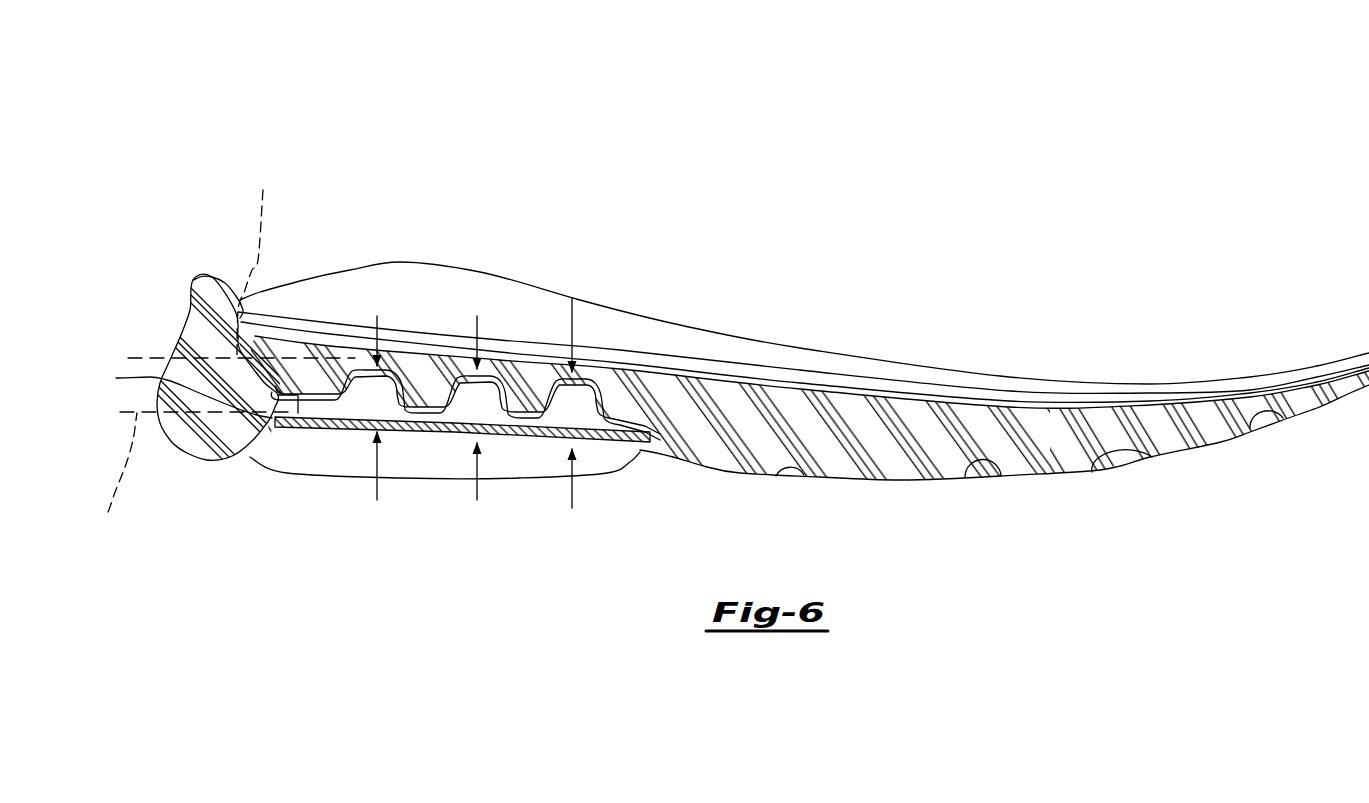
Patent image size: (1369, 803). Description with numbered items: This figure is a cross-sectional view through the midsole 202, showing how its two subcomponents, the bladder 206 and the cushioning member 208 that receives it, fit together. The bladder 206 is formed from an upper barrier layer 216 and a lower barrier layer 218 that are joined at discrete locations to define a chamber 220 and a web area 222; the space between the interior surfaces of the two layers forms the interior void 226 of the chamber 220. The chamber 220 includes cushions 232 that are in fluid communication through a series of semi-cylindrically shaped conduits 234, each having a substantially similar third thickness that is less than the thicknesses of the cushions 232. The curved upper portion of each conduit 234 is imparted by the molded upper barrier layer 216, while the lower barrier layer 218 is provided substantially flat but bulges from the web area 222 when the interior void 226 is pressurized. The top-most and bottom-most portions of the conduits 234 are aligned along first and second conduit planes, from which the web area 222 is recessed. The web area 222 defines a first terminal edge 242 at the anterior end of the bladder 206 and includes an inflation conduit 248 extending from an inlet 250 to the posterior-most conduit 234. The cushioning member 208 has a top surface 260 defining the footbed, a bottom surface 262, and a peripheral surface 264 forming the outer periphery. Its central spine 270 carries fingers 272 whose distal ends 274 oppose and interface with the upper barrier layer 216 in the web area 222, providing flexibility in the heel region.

The midsole 202 is at (259, 94).
The bladder 206 is at (346, 511).
The cushioning member 208 is at (449, 258).
The upper barrier layer 216 is at (292, 398).
The lower barrier layer 218 is at (334, 436).
The chamber 220 is at (578, 485).
The web area 222 is at (648, 528).
The interior void 226 is at (575, 412).
The cushions 232 is at (453, 480).
The conduits 234 is at (412, 376).
The first terminal edge 242 is at (640, 452).
The inflation conduit 248 is at (290, 440).
The inlet 250 is at (176, 389).
The top surface 260 is at (960, 398).
The bottom surface 262 is at (930, 480).
The peripheral surface 264 is at (180, 327).
The central spine 270 is at (535, 383).
The fingers 272 is at (400, 425).
The distal end 274 is at (400, 425).